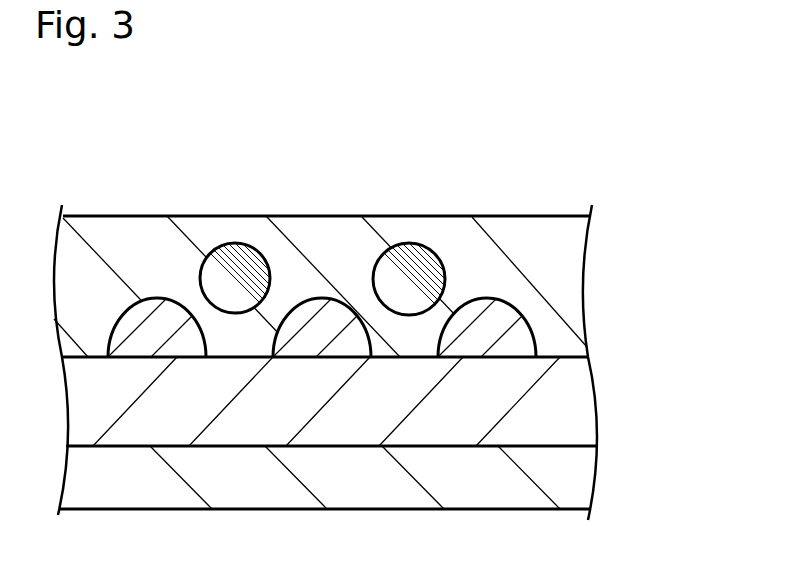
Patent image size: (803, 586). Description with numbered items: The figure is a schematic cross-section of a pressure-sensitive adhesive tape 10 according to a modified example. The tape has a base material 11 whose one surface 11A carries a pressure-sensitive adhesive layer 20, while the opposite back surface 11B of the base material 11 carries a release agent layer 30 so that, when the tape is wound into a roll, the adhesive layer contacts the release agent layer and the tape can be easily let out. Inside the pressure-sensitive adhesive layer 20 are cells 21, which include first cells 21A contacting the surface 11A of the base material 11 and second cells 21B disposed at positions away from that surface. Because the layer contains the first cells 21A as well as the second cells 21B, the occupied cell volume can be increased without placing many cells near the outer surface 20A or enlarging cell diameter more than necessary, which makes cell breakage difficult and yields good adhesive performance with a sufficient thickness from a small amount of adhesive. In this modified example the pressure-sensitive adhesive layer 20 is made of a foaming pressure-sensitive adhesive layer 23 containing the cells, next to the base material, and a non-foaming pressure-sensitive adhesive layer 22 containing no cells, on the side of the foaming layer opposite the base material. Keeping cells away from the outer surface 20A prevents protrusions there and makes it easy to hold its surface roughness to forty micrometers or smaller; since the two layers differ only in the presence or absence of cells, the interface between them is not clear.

The pressure-sensitive adhesive tape 10 is at (435, 192).
The base material 11 is at (568, 410).
The surface of the base material 11A is at (547, 357).
The back surface 11B is at (363, 447).
The pressure-sensitive adhesive layer 20 is at (381, 283).
The outer surface of the pressure-sensitive adhesive layer 20A is at (325, 216).
The cells 21 is at (327, 225).
The first cells 21A is at (157, 317).
The second cells 21B is at (233, 268).
The non-foaming pressure-sensitive adhesive layer 22 is at (627, 230).
The foaming pressure-sensitive adhesive layer 23 is at (602, 242).
The release agent layer 30 is at (578, 480).